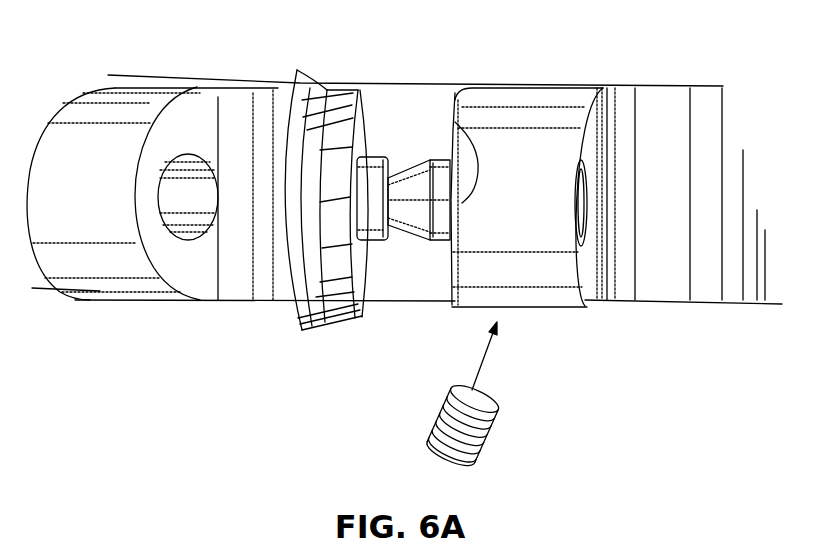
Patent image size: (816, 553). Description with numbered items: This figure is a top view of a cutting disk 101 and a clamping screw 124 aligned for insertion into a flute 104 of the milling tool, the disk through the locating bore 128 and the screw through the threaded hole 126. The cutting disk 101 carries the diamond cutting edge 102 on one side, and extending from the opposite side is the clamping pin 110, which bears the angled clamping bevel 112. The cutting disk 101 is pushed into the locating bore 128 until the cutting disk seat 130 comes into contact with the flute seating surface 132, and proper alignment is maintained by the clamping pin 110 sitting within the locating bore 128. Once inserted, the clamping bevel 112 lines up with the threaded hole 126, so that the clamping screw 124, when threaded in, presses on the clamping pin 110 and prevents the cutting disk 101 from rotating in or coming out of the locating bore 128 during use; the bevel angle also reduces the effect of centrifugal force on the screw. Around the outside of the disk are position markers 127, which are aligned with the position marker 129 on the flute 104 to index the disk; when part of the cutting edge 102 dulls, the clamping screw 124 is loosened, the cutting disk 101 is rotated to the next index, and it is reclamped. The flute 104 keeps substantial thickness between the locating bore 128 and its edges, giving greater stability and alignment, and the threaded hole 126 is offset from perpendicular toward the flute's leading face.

The cutting disk 101 is at (305, 335).
The cutting edge 102 is at (282, 318).
The flute 104 is at (90, 300).
The clamping pin 110 is at (450, 157).
The clamping bevel 112 is at (393, 238).
The clamping screw 124 is at (490, 433).
The threaded hole 126 is at (507, 308).
The position markers 127 is at (342, 87).
The locating bore 128 is at (190, 213).
The position marker 129 is at (477, 157).
The cutting disk seat 130 is at (367, 300).
The flute seating surface 132 is at (450, 242).